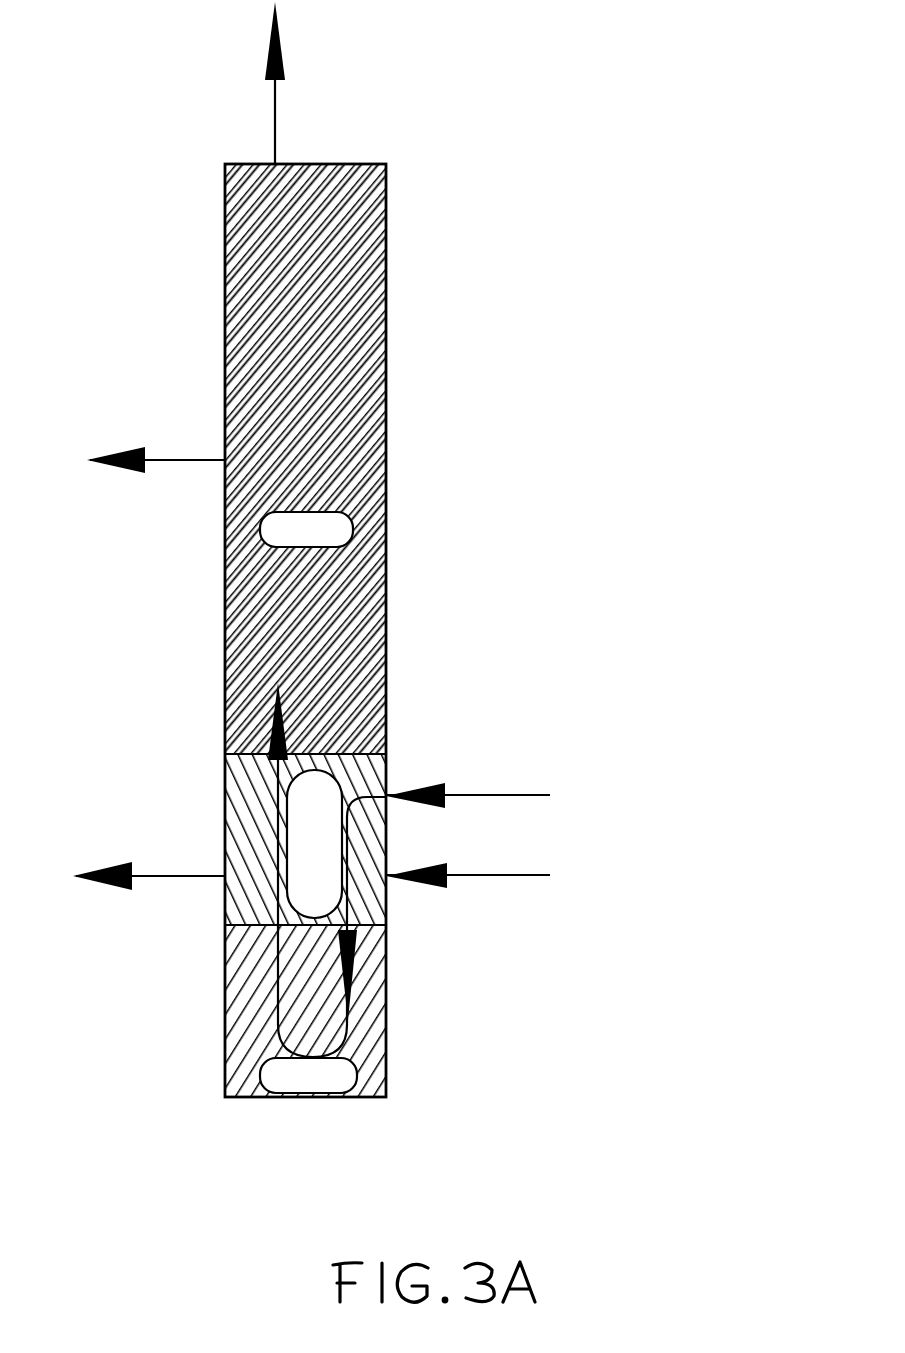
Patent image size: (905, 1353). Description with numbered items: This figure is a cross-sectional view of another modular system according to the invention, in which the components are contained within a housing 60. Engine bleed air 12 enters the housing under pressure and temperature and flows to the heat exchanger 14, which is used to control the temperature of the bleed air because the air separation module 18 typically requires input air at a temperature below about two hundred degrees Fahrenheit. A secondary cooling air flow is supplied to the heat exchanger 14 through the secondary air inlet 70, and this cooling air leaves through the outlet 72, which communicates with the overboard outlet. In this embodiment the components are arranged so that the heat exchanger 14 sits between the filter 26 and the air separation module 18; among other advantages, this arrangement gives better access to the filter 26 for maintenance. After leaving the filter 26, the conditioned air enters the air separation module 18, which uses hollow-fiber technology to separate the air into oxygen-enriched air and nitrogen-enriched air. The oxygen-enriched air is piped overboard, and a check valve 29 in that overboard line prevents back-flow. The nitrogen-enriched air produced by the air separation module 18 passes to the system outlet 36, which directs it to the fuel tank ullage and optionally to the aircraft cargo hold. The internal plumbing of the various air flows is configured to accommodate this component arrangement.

The housing 60 is at (389, 362).
The system outlet 36 is at (275, 130).
The check valve 29 is at (212, 462).
The air separation module 18 is at (368, 508).
The heat exchanger 14 is at (243, 808).
The bleed air 12 is at (503, 798).
The secondary air inlet 70 is at (532, 875).
The outlet 72 is at (185, 876).
The filter 26 is at (376, 1060).